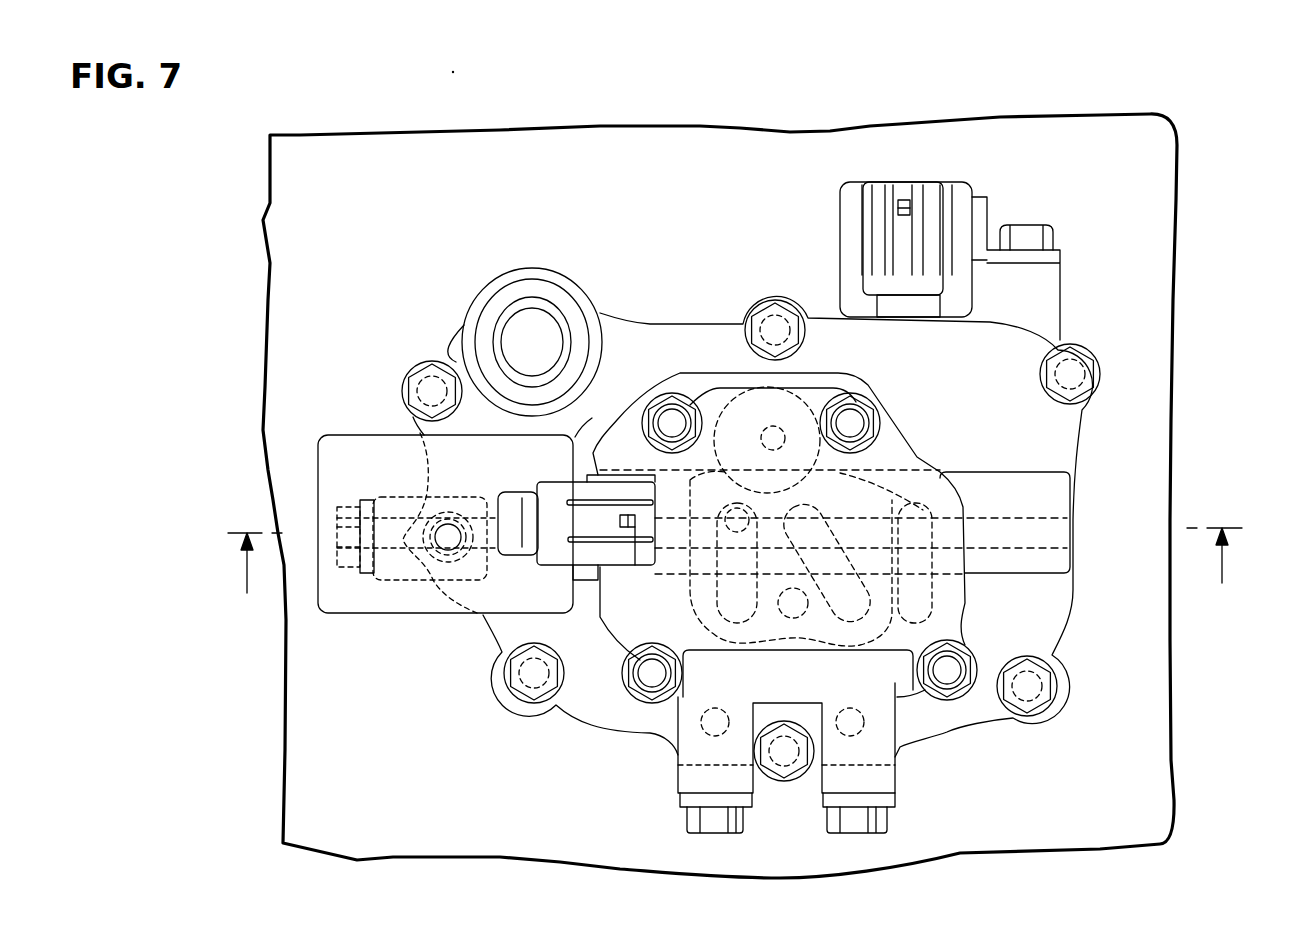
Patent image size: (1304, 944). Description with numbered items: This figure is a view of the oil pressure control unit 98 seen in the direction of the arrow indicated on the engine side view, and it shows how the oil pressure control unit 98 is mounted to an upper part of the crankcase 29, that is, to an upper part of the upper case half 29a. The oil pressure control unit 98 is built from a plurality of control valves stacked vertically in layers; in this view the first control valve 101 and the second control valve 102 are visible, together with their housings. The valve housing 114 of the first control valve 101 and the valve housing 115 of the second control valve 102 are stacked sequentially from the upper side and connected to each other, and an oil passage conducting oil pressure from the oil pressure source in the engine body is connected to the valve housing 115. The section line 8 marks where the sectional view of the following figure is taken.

The crankcase 29 is at (459, 233).
The upper case half 29a is at (1157, 245).
The oil pressure control unit 98 is at (642, 320).
The first control valve 101 is at (527, 477).
The second control valve 102 is at (832, 281).
The valve housing 114 is at (888, 457).
The valve housing 115 is at (1040, 428).
The line 8- 8 is at (735, 584).